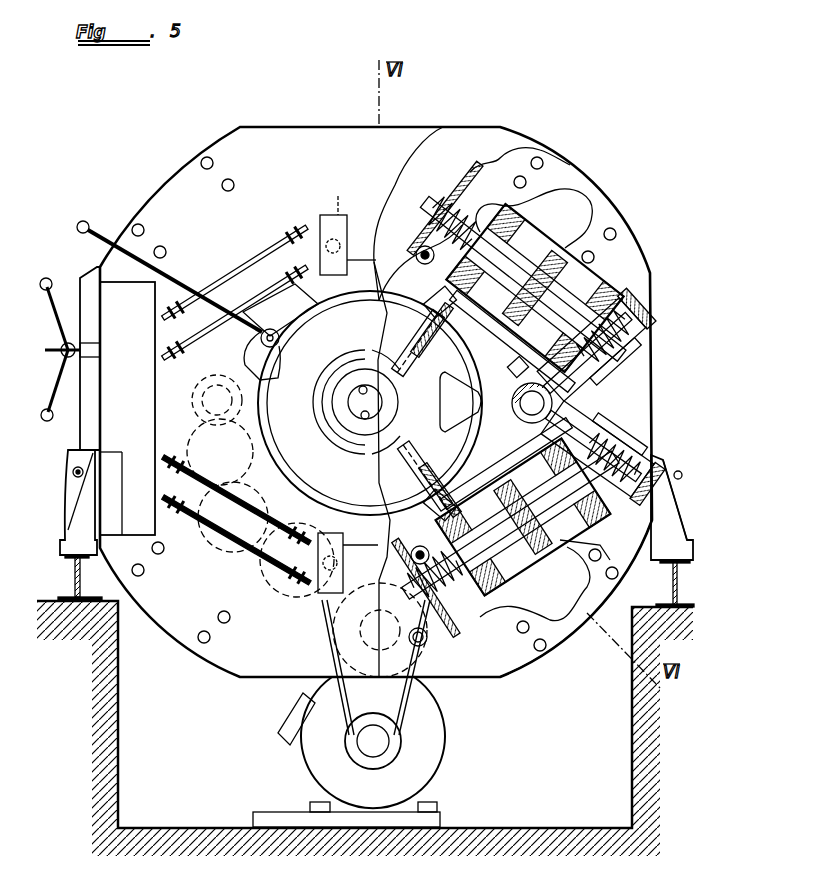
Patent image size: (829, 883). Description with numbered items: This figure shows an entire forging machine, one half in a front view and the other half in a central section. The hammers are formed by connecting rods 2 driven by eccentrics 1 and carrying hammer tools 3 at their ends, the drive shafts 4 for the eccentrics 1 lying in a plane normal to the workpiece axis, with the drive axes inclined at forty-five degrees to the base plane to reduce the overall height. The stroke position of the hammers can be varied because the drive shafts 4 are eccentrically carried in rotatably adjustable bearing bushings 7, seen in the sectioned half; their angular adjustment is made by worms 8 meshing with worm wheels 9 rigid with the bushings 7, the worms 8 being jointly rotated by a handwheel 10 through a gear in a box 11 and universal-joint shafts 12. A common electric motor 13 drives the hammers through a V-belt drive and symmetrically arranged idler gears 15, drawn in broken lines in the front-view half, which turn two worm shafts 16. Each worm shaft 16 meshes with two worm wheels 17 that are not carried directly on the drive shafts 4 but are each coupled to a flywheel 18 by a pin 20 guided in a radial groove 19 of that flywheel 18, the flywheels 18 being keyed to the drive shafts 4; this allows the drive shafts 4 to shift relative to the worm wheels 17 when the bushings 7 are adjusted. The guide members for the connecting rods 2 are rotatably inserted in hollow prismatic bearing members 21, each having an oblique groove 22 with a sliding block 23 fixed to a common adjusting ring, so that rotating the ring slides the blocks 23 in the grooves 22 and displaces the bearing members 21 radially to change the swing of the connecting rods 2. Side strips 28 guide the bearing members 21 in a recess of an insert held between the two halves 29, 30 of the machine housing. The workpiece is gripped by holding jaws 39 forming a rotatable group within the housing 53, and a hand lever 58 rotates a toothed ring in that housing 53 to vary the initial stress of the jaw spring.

The eccentric 1 is at (527, 262).
The connecting rod 2 is at (443, 313).
The hammer tool 3 is at (352, 400).
The drive shaft 4 is at (523, 307).
The bearing bushing 7 is at (510, 207).
The worm 8 is at (338, 200).
The worm wheel 9 is at (483, 170).
The handwheel 10 is at (64, 358).
The box 11 is at (97, 437).
The universal-joint shaft 12 is at (250, 290).
The electric motor 13 is at (427, 740).
The idler gear 15 is at (230, 557).
The worm shaft 16 is at (547, 407).
The worm wheel 17 is at (623, 332).
The flywheel 18 is at (627, 302).
The radial groove 19 is at (519, 367).
The pin 20 is at (613, 363).
The bearing member 21 is at (372, 354).
The oblique groove 22 is at (437, 347).
The sliding block 23 is at (417, 363).
The side strip 28 is at (450, 420).
The housing half 29 is at (268, 143).
The housing half 30 is at (585, 617).
The holding jaw 39 is at (360, 388).
The housing 53 is at (258, 376).
The hand lever 58 is at (163, 272).